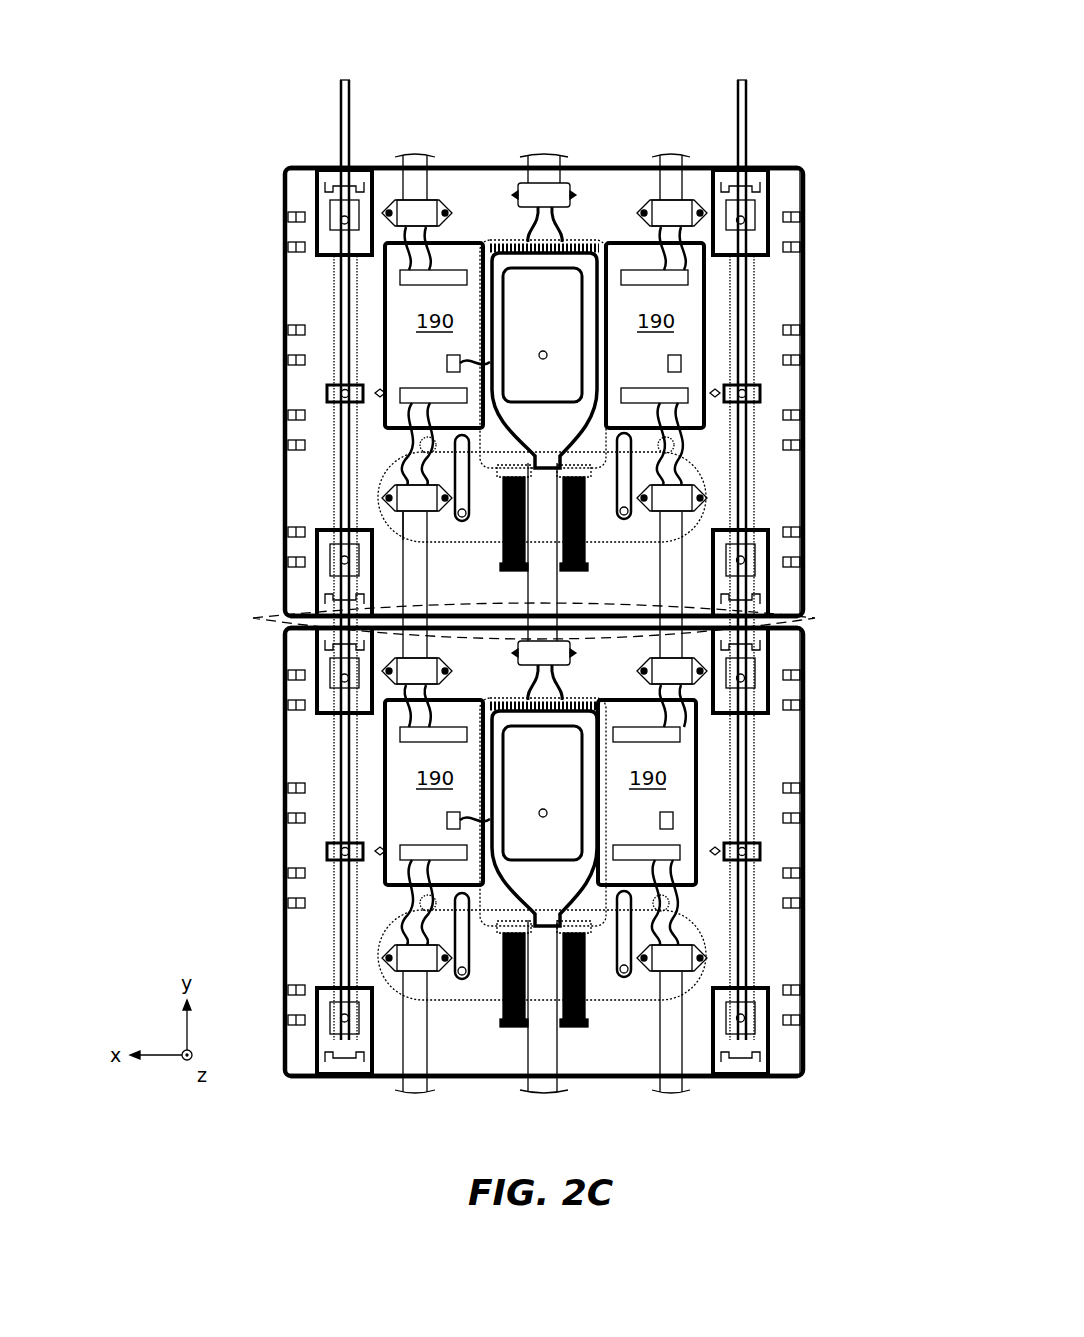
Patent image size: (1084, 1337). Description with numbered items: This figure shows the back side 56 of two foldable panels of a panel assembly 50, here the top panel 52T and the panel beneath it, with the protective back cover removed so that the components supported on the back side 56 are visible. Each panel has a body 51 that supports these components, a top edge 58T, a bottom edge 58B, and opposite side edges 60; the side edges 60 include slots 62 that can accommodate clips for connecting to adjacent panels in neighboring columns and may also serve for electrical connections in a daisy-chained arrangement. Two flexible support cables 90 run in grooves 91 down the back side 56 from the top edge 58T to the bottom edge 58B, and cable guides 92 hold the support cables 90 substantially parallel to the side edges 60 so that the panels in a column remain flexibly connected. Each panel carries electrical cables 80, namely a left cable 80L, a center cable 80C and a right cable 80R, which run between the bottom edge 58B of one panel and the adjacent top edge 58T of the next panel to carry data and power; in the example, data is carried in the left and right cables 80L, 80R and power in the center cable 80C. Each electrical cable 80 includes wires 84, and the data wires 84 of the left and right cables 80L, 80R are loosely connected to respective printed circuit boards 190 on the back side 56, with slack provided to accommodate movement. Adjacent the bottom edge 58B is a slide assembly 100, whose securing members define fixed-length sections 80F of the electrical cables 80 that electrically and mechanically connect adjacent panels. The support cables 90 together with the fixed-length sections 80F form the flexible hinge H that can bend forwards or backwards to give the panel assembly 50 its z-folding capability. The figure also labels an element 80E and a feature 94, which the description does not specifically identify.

The panel assembly 50 is at (175, 66).
The top panel 52T is at (250, 158).
The top edge 58T is at (800, 168).
The bottom edge 58B is at (305, 613).
The support cables 90 is at (340, 100).
The grooves 91 is at (338, 270).
The cable guides 92 is at (320, 202).
The right electrical cable 80R is at (415, 155).
The center electrical cable 80C is at (540, 155).
The left electrical cable 80L is at (668, 155).
The end conduit 80E is at (697, 158).
The fixed-length cable sections 80F is at (388, 545).
The electrical cables 80 is at (318, 1100).
The back side 56 is at (488, 216).
The wires 84 is at (655, 240).
The slots 62 is at (800, 247).
The side edges 60 is at (805, 318).
The body 51 is at (785, 468).
The printed circuit boards 190 is at (544, 564).
The slide assembly 100 is at (385, 475).
The interface plane 94 is at (770, 607).
The hinge H is at (250, 635).